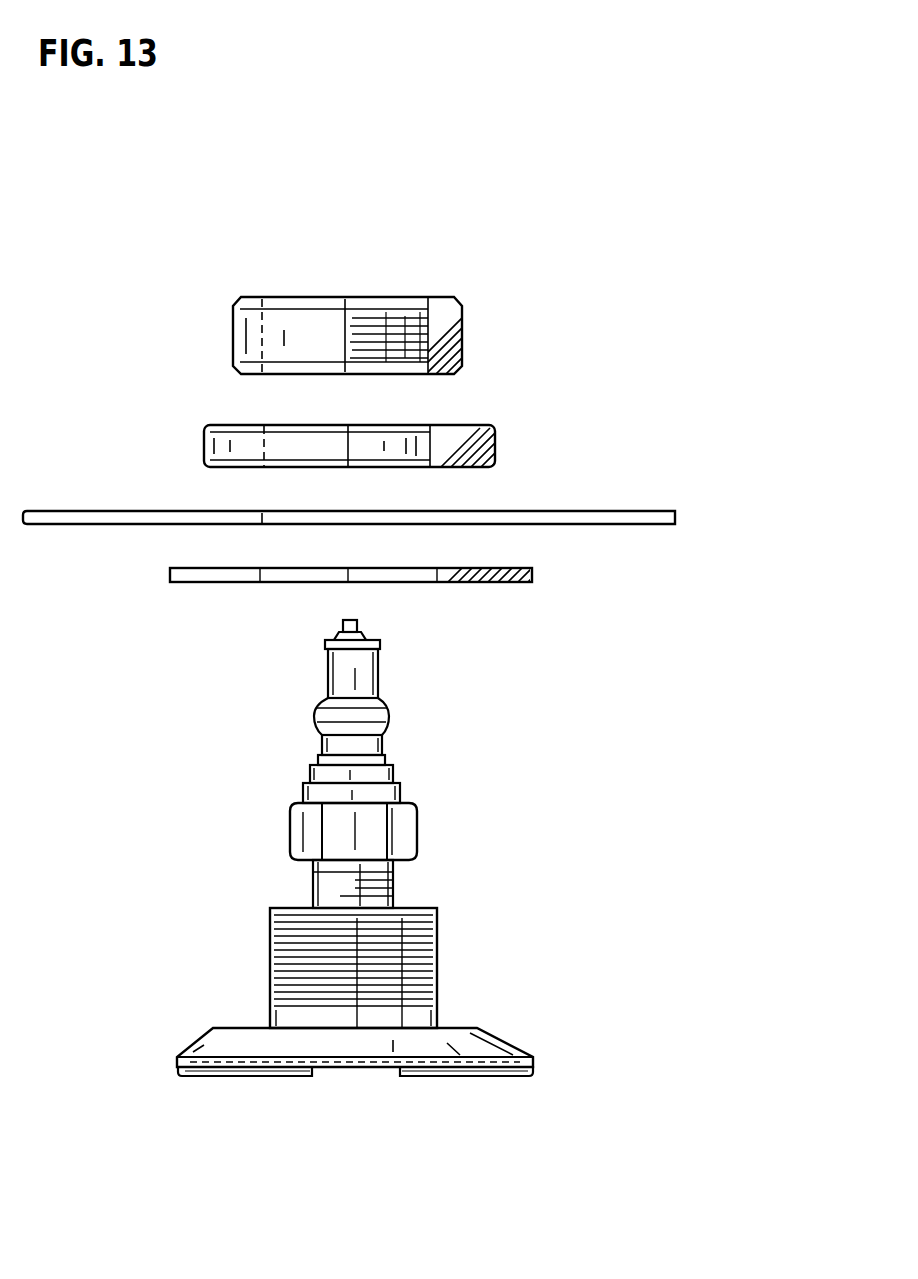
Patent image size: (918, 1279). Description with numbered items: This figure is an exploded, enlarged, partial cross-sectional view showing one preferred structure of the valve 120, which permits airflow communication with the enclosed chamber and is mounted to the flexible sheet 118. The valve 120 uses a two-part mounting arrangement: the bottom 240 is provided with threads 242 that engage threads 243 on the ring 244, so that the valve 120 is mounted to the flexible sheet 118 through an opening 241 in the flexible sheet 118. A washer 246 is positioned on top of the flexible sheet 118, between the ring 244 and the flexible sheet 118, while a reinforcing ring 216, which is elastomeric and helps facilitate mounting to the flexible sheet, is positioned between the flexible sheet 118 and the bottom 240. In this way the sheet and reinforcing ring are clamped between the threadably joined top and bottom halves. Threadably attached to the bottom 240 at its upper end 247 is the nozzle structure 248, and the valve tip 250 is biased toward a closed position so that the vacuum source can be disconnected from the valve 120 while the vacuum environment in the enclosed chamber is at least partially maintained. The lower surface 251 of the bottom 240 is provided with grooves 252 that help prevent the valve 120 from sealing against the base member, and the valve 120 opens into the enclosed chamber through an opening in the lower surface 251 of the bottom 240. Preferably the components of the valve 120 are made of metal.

The valve 120 is at (168, 304).
The threads 243 is at (401, 320).
The ring 244 is at (461, 336).
The washer 246 is at (494, 446).
The flexible sheet 118 is at (623, 511).
The opening 241 is at (270, 519).
The reinforcing ring 216 is at (532, 575).
The valve tip 250 is at (358, 625).
The nozzle structure 248 is at (390, 718).
The upper end 247 is at (395, 888).
The threads 242 is at (437, 965).
The bottom 240 is at (507, 1040).
The lower surface 251 is at (296, 1078).
The grooves 252 is at (217, 1076).